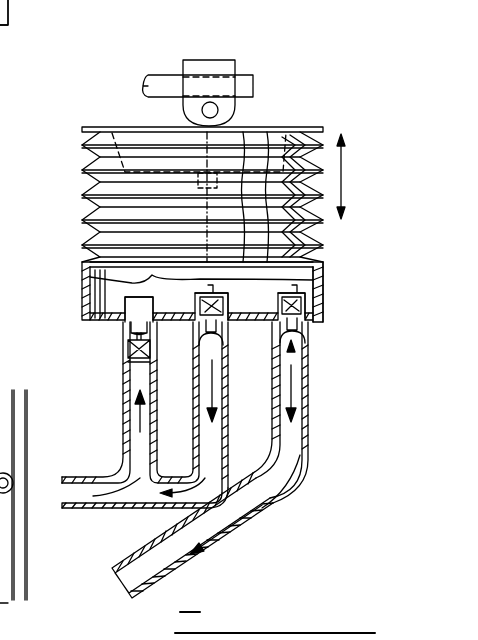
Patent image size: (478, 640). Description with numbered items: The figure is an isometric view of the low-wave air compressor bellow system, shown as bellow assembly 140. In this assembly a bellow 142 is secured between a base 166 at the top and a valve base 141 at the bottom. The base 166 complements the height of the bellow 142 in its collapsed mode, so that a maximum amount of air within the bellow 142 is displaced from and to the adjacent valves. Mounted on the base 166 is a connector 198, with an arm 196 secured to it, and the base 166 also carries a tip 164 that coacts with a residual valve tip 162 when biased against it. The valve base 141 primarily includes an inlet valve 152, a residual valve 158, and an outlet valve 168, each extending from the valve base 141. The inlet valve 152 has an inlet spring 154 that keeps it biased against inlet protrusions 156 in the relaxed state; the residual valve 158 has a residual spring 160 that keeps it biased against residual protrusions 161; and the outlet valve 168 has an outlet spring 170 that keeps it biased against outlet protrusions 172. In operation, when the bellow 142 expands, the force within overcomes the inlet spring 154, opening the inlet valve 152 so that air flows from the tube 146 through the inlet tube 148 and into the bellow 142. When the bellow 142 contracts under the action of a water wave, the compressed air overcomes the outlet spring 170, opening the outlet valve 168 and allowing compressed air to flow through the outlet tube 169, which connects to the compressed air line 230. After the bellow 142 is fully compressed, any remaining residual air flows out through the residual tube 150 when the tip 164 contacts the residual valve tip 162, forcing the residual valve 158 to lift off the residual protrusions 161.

The bellow assembly 140 is at (82, 200).
The valve base 141 is at (82, 300).
The bellow 142 is at (84, 232).
The tube 146 is at (72, 494).
The inlet tube 148 is at (143, 378).
The residual tube 150 is at (213, 430).
The inlet valve 152 is at (126, 325).
The inlet spring 154 is at (135, 360).
The inlet protrusions 156 is at (124, 338).
The residual valve 158 is at (315, 292).
The residual spring 160 is at (243, 312).
The residual protrusions 161 is at (214, 325).
The residual valve tip 162 is at (203, 287).
The tip 164 is at (200, 184).
The base 166 is at (280, 123).
The outlet valve 168 is at (306, 350).
The outlet tube 169 is at (292, 467).
The outlet spring 170 is at (306, 338).
The outlet protrusions 172 is at (302, 322).
The arm 196 is at (165, 73).
The connector 198 is at (216, 60).
The compressed air line 230 is at (0, 54).